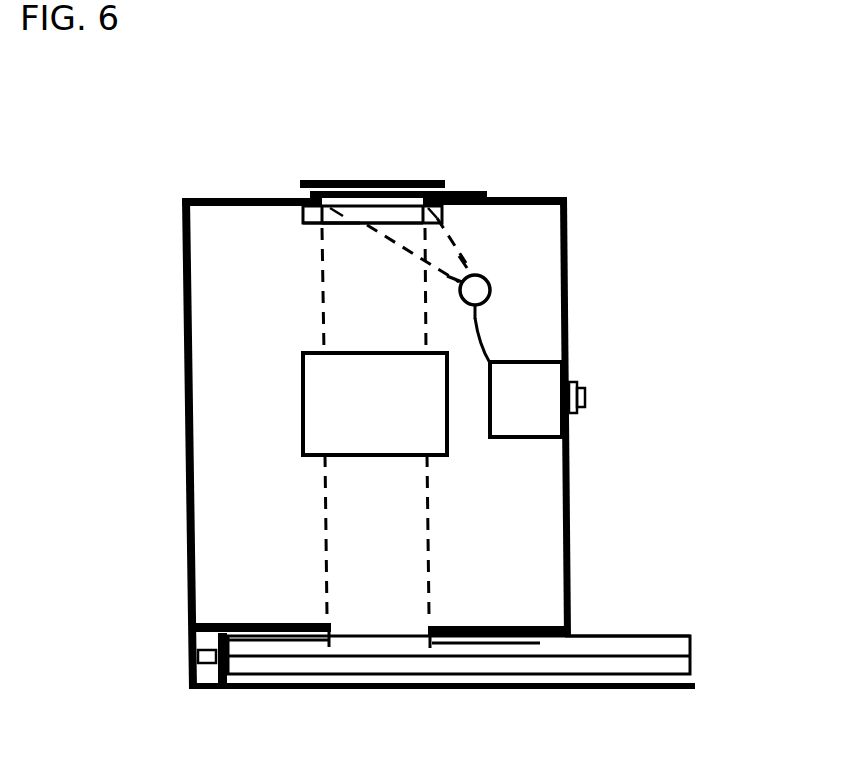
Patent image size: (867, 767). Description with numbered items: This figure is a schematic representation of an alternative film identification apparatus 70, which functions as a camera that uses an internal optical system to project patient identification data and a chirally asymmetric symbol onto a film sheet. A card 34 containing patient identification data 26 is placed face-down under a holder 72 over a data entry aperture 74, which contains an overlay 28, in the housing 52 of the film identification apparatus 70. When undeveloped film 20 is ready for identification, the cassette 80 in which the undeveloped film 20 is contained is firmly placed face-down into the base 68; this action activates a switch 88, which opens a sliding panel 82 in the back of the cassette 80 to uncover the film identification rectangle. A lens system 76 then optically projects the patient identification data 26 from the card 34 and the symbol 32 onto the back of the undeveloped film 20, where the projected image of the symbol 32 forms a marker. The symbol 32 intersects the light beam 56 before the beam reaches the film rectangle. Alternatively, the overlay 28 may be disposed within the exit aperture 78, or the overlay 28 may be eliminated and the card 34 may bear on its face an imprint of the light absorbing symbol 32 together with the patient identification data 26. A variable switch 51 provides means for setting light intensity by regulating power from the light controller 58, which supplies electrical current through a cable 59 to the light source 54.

The undeveloped film 20 is at (663, 655).
The patient identification data 26 is at (370, 228).
The overlay 28 is at (308, 223).
The symbol 32 is at (337, 225).
The card 34 is at (470, 193).
The variable switch 51 is at (586, 398).
The housing 52 is at (207, 198).
The light source 54 is at (492, 293).
The light beam 56 is at (387, 304).
The light controller 58 is at (540, 414).
The cable 59 is at (480, 342).
The base 68 is at (327, 689).
The film identification apparatus 70 is at (379, 140).
The holder 72 is at (331, 181).
The data entry aperture 74 is at (398, 200).
The lens system 76 is at (392, 419).
The exit aperture 78 is at (370, 627).
The cassette 80 is at (588, 635).
The sliding panel 82 is at (515, 645).
The switch 88 is at (203, 657).